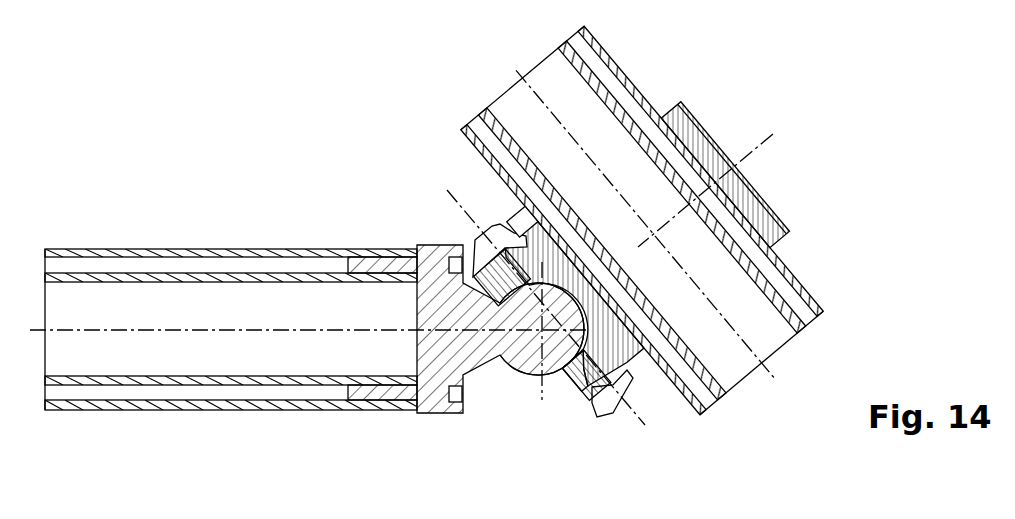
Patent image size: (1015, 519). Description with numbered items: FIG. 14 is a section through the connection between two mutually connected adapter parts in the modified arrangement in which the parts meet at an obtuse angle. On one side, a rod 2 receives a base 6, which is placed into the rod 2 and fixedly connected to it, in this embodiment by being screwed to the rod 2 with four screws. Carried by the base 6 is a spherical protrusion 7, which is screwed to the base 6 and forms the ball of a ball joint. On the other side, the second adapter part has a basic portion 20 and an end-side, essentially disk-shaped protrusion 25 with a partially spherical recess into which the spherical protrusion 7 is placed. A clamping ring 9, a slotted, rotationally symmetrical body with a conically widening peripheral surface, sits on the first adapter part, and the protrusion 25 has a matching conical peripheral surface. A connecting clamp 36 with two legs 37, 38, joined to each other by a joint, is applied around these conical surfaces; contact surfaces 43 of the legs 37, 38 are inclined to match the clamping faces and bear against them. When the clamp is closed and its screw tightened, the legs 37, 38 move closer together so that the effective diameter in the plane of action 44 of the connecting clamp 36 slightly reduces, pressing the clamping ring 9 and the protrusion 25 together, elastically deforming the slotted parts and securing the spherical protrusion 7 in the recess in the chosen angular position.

The rod 2 is at (215, 250).
The base 6 is at (437, 413).
The spherical protrusion 7 is at (527, 360).
The clamping ring 9 is at (556, 386).
The basic portion 20 is at (697, 133).
The end-side protrusion 25 is at (647, 370).
The connecting clamp 36 is at (498, 214).
The leg 37 is at (480, 246).
The leg 38 is at (600, 402).
The contact surfaces 43 is at (513, 243).
The plane of action 44 is at (447, 200).